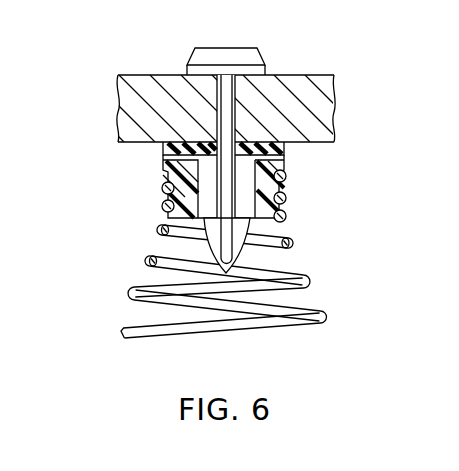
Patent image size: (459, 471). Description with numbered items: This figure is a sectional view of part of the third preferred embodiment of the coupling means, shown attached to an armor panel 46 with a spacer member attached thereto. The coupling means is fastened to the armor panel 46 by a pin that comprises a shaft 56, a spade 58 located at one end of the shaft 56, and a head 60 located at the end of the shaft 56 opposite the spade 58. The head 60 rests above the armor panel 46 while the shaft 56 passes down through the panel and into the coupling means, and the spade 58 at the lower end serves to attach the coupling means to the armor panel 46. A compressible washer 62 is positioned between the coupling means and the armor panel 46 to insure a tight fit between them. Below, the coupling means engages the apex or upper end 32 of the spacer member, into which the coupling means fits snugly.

The head 60 is at (215, 48).
The shaft 56 is at (229, 120).
The armor panel 46 is at (119, 101).
The compressible washer 62 is at (165, 152).
The upper end of spacer member 32 is at (167, 212).
The spade 58 is at (244, 250).